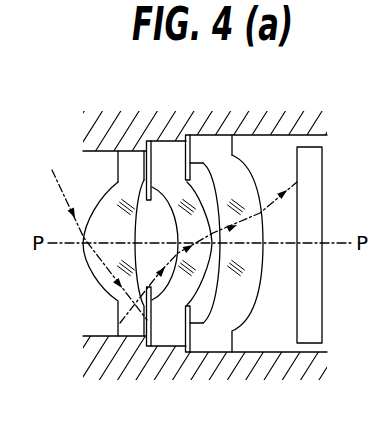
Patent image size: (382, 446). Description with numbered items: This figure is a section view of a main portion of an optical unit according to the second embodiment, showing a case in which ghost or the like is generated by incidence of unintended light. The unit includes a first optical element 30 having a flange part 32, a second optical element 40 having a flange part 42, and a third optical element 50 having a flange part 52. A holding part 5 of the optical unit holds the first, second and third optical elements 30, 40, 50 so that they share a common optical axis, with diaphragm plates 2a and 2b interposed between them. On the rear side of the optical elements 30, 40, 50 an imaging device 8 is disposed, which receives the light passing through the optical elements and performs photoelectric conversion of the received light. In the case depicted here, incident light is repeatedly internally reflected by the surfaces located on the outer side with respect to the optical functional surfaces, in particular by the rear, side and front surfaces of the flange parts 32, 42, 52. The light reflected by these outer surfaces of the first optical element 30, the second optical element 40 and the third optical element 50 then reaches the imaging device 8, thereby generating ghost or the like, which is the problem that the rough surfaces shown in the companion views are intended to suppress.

The first optical element 30 is at (133, 340).
The flange part 32 is at (132, 162).
The second optical element 40 is at (188, 354).
The flange part 42 is at (170, 150).
The third optical element 50 is at (228, 357).
The flange part 52 is at (212, 142).
The diaphragm plate 2a is at (151, 352).
The diaphragm plate 2b is at (200, 354).
The holding part 5 is at (274, 367).
The imaging device 8 is at (308, 352).